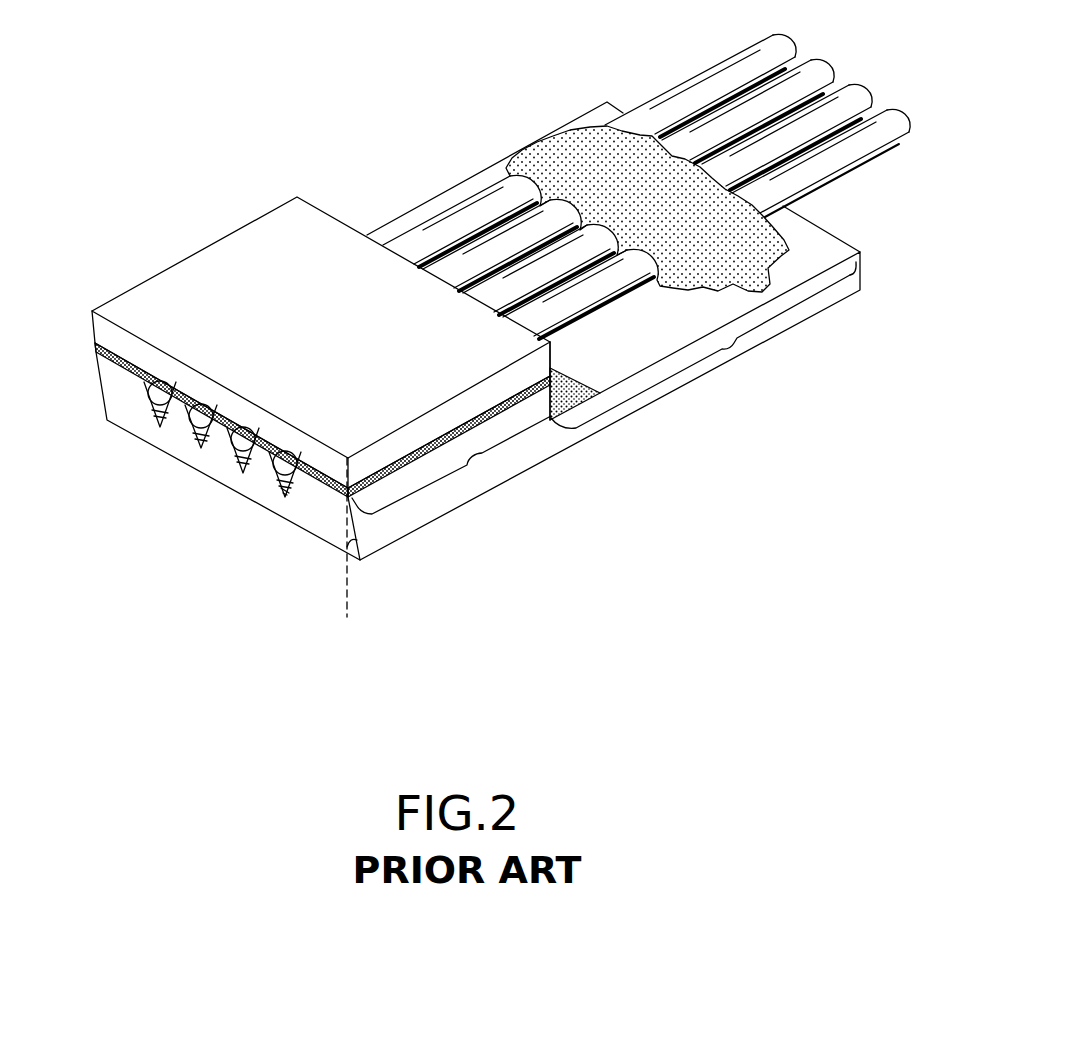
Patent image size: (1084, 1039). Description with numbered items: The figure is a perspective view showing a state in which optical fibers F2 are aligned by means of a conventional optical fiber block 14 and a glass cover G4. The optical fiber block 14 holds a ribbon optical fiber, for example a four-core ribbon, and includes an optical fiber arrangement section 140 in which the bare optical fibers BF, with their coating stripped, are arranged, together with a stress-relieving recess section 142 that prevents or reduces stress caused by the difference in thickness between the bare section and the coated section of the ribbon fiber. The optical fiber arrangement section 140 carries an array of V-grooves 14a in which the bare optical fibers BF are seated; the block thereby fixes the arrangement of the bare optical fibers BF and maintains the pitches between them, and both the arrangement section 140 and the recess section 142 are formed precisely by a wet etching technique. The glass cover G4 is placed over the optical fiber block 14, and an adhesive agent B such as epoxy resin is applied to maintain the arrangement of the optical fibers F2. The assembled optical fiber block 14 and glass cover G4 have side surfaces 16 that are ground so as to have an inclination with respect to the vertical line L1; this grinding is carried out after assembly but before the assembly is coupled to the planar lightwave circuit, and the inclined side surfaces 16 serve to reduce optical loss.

The optical fiber block 14 is at (547, 451).
The V-grooves 14a is at (285, 497).
The optical fiber arrangement section 140 is at (467, 465).
The stress-relieving recess section 142 is at (737, 335).
The side surfaces 16 is at (84, 311).
The glass cover G4 is at (233, 258).
The optical fibers F2 is at (703, 83).
The adhesive agent B is at (550, 143).
The bare optical fibers BF is at (298, 483).
The vertical line L1 is at (344, 556).